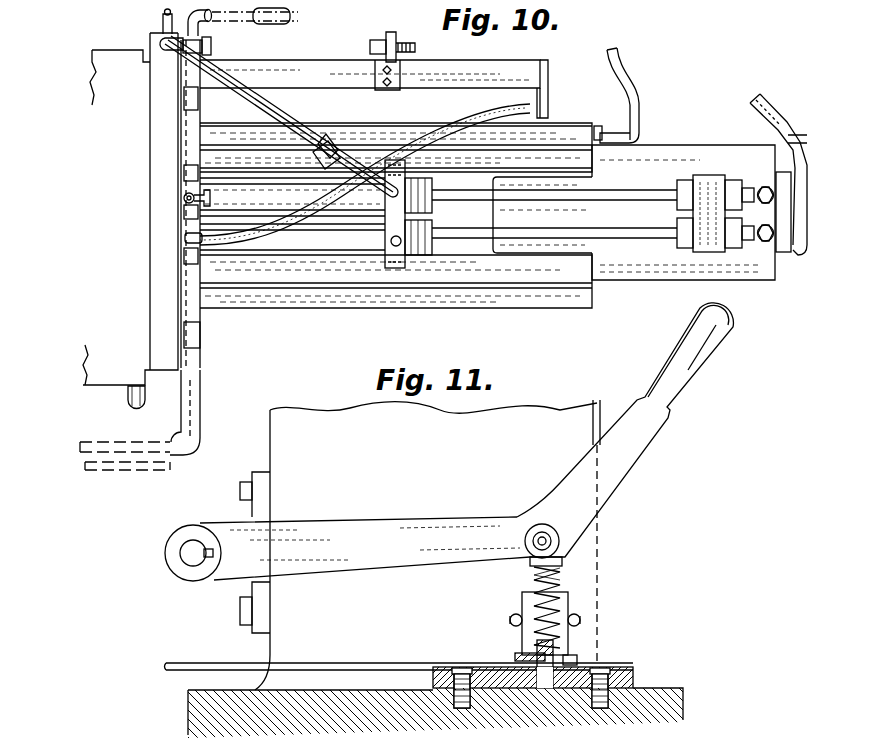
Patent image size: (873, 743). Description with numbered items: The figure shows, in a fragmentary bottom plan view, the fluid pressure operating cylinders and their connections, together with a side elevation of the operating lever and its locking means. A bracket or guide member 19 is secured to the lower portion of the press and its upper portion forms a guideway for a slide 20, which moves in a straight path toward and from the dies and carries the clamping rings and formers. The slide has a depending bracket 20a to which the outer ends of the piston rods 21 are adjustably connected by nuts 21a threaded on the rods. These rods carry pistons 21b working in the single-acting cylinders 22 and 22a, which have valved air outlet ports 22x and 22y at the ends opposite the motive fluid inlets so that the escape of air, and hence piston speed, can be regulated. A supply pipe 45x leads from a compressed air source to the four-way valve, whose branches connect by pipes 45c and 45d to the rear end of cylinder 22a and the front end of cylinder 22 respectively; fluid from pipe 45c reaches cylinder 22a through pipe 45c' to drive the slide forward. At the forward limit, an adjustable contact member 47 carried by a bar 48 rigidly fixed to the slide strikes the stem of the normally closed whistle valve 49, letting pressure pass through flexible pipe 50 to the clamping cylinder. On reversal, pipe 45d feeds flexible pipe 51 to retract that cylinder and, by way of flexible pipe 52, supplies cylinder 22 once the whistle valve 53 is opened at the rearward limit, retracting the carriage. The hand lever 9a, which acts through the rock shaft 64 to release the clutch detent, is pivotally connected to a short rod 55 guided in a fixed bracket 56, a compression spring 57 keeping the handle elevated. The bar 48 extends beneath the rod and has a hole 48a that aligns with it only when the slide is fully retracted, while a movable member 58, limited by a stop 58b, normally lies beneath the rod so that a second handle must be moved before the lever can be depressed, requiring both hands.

In FIG. 11, the hand lever 9a is at (628, 445).
In FIG. 10, the bracket or guide member 19 is at (318, 288).
In FIG. 10, the slide 20 is at (660, 150).
In FIG. 10, the depending bracket 20a is at (704, 192).
In FIG. 10, the piston rods 21 is at (633, 195).
In FIG. 10, the nuts 21a is at (700, 240).
In FIG. 10, the pistons 21b is at (392, 207).
In FIG. 10, the cylinder 22 is at (292, 239).
In FIG. 10, the cylinder 22a is at (292, 197).
In FIG. 10, the air outlet port 22x is at (408, 256).
In FIG. 10, the air outlet port 22y is at (183, 198).
In FIG. 10, the pipe 45c' is at (279, 116).
In FIG. 10, the supply pipe 45x is at (127, 393).
In FIG. 10, the pipe 45c is at (140, 412).
In FIG. 10, the pipe 45d is at (150, 466).
In FIG. 10, the adjustable contact member 47 is at (370, 46).
In FIG. 10, the bar 48 is at (281, 72).
In FIG. 11, the bar 48 is at (195, 663).
In FIG. 11, the hole 48a is at (553, 663).
In FIG. 10, the whistle valve 49 is at (212, 46).
In FIG. 10, the flexible pipe 50 is at (160, 20).
In FIG. 10, the flexible pipe 51 is at (292, 17).
In FIG. 10, the flexible pipe 52 is at (430, 128).
In FIG. 10, the whistle valve 53 is at (546, 100).
In FIG. 11, the rod 55 is at (552, 583).
In FIG. 11, the fixed bracket 56 is at (523, 643).
In FIG. 11, the compression spring 57 is at (531, 573).
In FIG. 11, the movable member 58 is at (515, 658).
In FIG. 11, the stop 58b is at (578, 658).
In FIG. 11, the rock shaft 64 is at (186, 561).